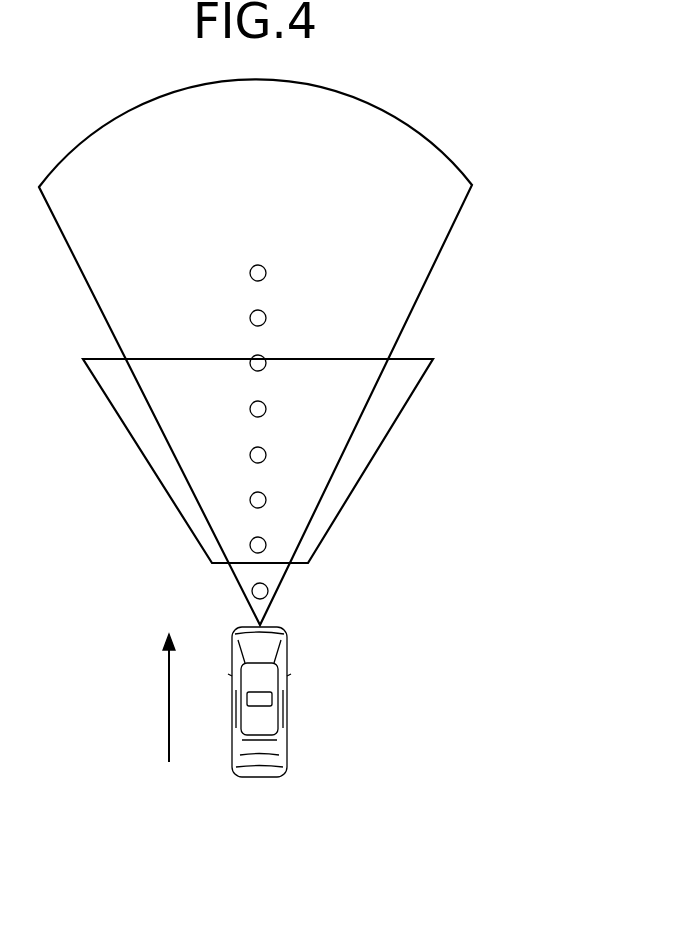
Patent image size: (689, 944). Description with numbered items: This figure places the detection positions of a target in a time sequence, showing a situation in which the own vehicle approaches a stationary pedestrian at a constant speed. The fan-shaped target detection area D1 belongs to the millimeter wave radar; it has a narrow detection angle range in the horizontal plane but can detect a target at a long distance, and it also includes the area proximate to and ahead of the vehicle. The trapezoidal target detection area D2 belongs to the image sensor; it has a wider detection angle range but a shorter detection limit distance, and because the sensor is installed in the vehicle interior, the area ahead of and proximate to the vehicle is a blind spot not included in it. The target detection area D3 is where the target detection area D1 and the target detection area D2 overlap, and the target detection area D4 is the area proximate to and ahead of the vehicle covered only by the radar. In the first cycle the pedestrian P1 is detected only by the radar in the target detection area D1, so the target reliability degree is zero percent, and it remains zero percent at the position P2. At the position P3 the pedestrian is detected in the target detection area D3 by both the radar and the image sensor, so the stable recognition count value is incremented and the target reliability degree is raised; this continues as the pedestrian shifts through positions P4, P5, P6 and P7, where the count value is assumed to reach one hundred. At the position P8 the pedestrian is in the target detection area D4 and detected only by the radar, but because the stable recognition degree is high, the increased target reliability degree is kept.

The pedestrian P1 is at (250, 268).
The pedestrian P2 is at (250, 314).
The pedestrian P3 is at (250, 360).
The pedestrian P4 is at (250, 407).
The pedestrian P5 is at (250, 453).
The pedestrian P6 is at (250, 499).
The pedestrian P7 is at (250, 545).
The pedestrian P8 is at (252, 591).
The target detection area D1 is at (397, 254).
The target detection area D2 is at (330, 495).
The target detection area D3 is at (345, 386).
The target detection area D4 is at (270, 577).